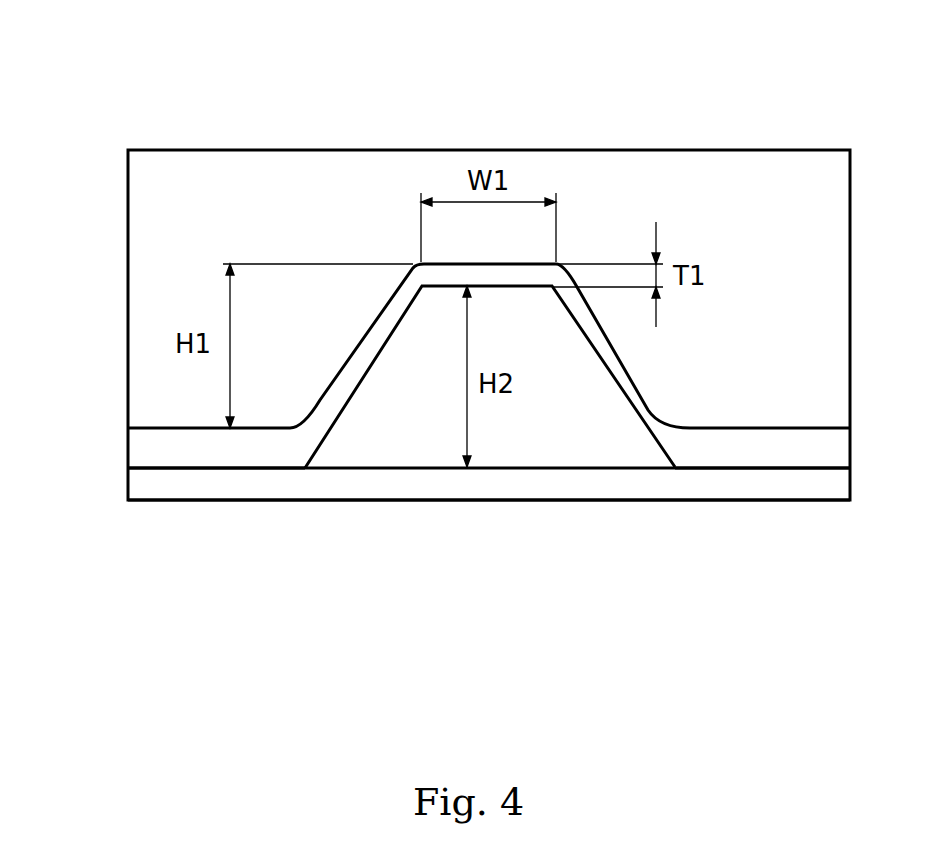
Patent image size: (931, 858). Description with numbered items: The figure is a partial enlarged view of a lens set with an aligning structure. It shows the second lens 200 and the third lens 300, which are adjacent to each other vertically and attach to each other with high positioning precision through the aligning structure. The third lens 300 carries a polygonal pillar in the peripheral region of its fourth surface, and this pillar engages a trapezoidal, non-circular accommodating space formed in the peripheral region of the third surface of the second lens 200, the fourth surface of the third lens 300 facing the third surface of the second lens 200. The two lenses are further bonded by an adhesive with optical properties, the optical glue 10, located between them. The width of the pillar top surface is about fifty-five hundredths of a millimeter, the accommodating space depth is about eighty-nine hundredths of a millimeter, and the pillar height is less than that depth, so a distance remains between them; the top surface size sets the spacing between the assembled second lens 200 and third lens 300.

The second lens 200 is at (220, 173).
The optical glue 10 is at (145, 450).
The third lens 300 is at (142, 491).